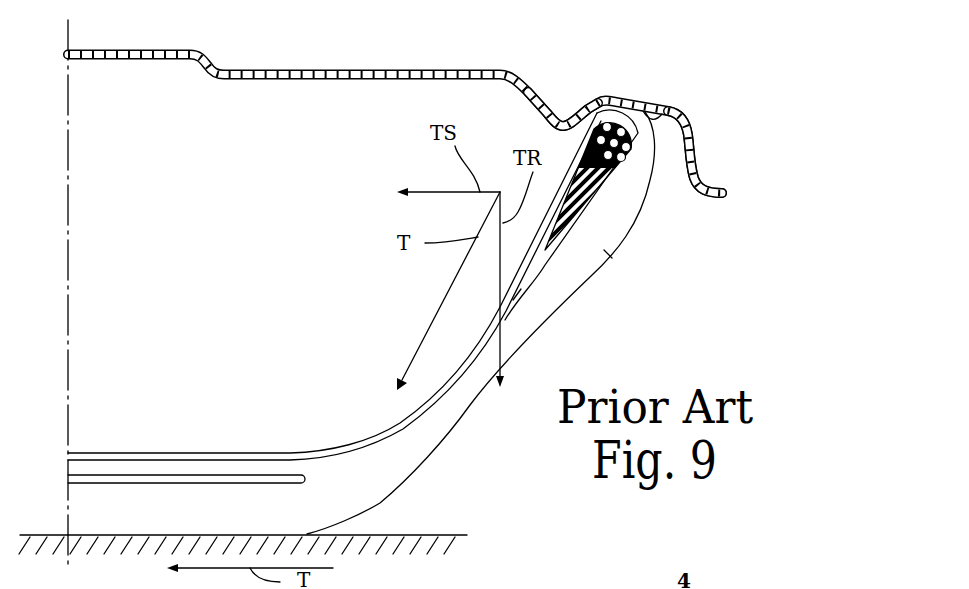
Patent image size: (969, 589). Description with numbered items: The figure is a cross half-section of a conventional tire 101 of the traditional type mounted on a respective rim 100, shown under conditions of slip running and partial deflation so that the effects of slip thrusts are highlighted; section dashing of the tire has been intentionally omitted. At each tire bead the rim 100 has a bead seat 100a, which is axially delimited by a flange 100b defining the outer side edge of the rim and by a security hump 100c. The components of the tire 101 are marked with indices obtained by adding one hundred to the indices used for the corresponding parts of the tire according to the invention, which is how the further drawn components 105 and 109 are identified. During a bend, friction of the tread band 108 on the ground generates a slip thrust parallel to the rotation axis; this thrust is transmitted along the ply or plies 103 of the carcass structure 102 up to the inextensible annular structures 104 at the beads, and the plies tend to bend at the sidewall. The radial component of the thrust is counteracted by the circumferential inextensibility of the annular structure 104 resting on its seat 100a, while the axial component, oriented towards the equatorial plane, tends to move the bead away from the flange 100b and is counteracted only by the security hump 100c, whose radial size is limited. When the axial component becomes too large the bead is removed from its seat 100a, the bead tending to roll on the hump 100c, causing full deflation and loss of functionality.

The rim 100 is at (410, 97).
The bead seat 100a is at (660, 105).
The flange 100b is at (702, 177).
The security hump 100c is at (567, 123).
The tire 101 is at (428, 302).
The carcass structure 102 is at (546, 270).
The carcass ply 103 is at (363, 443).
The inextensible annular structure 104 is at (621, 181).
The reinforcing layer 105 is at (230, 468).
The tread band 108 is at (403, 487).
The bead filler 109 is at (612, 258).